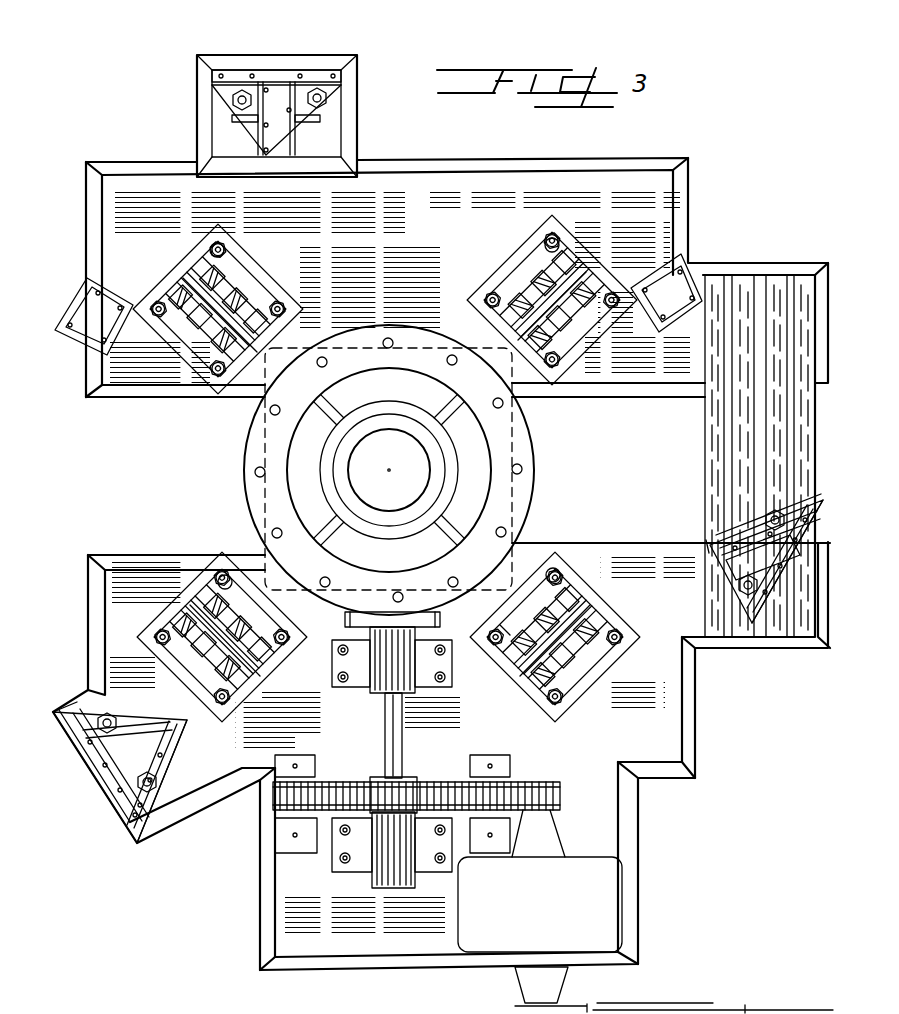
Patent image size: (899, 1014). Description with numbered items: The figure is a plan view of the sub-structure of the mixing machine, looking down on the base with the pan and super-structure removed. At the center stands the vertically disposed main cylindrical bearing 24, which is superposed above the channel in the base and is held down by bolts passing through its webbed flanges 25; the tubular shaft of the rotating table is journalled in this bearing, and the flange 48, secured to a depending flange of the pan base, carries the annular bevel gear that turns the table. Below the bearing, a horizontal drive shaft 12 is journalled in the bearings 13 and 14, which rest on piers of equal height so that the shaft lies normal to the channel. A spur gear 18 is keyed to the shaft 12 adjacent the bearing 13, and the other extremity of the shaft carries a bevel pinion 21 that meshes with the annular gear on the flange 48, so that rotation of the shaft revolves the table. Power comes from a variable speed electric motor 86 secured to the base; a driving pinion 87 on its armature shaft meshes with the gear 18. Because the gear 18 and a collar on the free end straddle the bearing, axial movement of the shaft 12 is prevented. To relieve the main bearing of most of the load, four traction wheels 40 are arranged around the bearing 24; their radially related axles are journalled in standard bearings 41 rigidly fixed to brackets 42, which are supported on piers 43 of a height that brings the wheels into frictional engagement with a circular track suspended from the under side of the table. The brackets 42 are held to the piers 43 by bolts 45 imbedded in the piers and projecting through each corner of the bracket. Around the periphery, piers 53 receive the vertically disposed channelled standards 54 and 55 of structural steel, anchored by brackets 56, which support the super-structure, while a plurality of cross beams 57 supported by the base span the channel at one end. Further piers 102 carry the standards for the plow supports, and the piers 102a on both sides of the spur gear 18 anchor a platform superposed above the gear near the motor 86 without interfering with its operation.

The drive shaft 12 is at (405, 722).
The bearing 13 is at (363, 853).
The bearing 14 is at (388, 665).
The spur gear 18 is at (417, 793).
The bevel pinion 21 is at (345, 620).
The main cylindrical bearing 24 is at (437, 462).
The webbed flanges 25 is at (463, 508).
The traction wheels 40 is at (253, 282).
The standard bearings 41 is at (253, 333).
The brackets 42 is at (210, 262).
The piers 43 is at (170, 608).
The bolts 45 is at (503, 627).
The flange 48 is at (520, 470).
The piers 53 is at (297, 63).
The channelled standard 54 is at (300, 100).
The channelled standard 55 is at (258, 107).
The brackets 56 is at (228, 90).
The cross beams 57 is at (795, 300).
The variable speed electric motor 86 is at (540, 904).
The driving pinion 87 is at (560, 787).
The piers 102 is at (80, 302).
The piers 102a is at (498, 763).